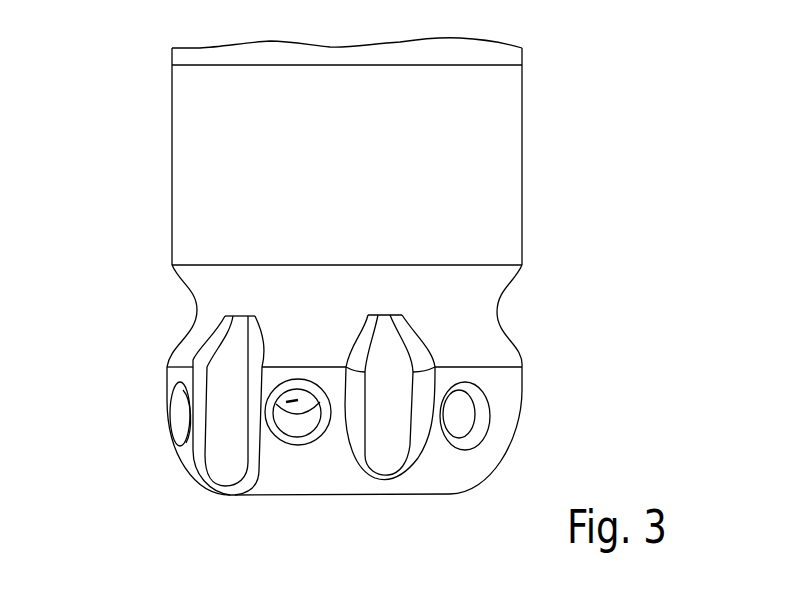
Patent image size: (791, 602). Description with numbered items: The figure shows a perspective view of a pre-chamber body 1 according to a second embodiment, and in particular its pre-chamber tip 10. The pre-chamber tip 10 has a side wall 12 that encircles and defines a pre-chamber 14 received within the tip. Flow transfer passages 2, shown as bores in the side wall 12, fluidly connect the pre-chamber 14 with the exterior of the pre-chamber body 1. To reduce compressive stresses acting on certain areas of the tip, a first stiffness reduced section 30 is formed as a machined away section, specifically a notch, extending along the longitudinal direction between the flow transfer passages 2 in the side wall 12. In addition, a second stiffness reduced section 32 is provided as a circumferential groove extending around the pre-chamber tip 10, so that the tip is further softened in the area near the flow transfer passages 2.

The pre-chamber body 1 is at (401, 139).
The side wall 12 is at (493, 200).
The pre-chamber tip 10 is at (352, 419).
The second stiffness reduced section 32 is at (215, 297).
The flow transfer passages 2 is at (460, 412).
The first stiffness reduced section 30 is at (389, 432).
The pre-chamber 14 is at (298, 400).